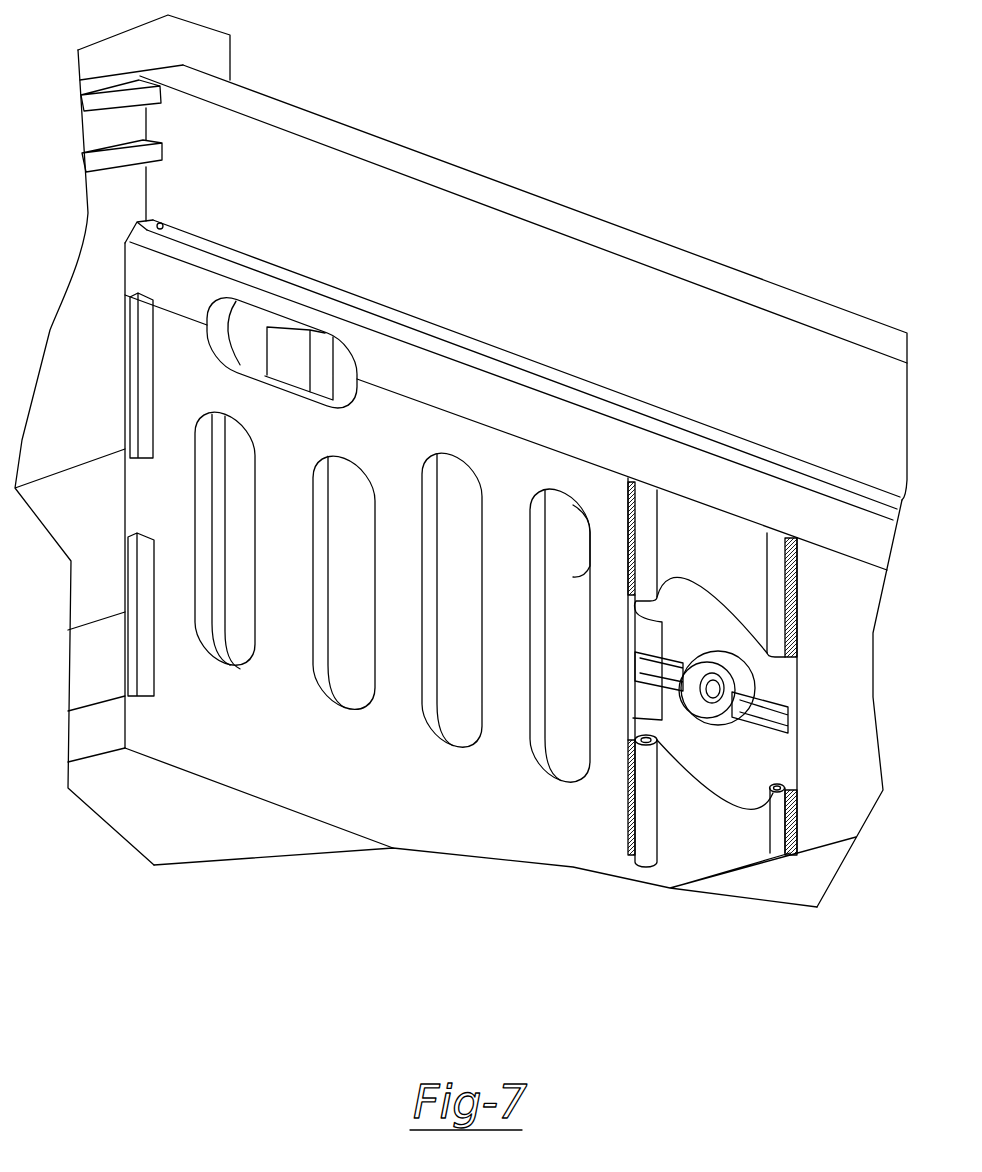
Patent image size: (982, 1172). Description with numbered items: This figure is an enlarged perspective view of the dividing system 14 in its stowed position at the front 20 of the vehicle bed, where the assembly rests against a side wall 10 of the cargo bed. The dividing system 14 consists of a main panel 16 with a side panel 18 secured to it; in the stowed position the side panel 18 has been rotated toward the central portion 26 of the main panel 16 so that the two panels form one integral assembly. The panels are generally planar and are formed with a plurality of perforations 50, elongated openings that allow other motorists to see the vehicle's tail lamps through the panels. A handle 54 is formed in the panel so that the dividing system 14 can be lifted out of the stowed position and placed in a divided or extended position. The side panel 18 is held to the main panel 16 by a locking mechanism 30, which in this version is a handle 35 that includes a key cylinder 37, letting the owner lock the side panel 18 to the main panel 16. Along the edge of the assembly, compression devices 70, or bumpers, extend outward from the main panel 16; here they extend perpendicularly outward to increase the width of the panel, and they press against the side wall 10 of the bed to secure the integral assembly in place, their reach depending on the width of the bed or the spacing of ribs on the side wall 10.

The side wall 10 is at (76, 414).
The dividing system 14 is at (690, 410).
The main panel 16 is at (700, 552).
The side panel 18 is at (377, 782).
The front of the bed 20 is at (552, 258).
The central portion 26 is at (755, 578).
The locking mechanism 30 is at (743, 733).
The handle 35 is at (770, 692).
The key cylinder 37 is at (716, 697).
The perforations 50 is at (326, 667).
The handle 54 is at (350, 348).
The compression device 70 is at (147, 387).